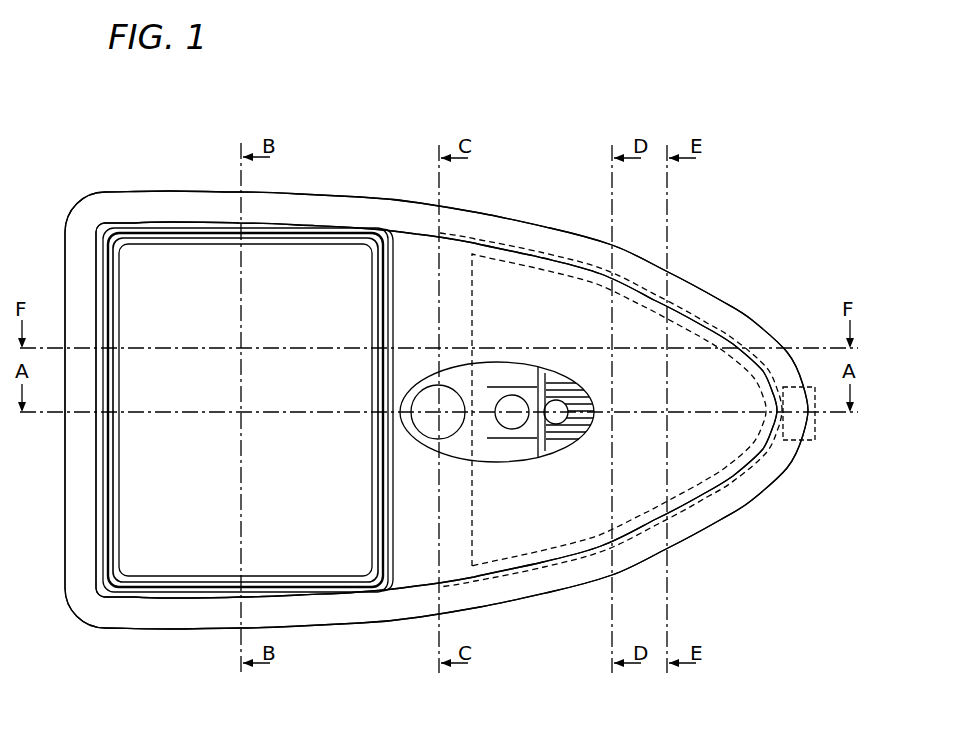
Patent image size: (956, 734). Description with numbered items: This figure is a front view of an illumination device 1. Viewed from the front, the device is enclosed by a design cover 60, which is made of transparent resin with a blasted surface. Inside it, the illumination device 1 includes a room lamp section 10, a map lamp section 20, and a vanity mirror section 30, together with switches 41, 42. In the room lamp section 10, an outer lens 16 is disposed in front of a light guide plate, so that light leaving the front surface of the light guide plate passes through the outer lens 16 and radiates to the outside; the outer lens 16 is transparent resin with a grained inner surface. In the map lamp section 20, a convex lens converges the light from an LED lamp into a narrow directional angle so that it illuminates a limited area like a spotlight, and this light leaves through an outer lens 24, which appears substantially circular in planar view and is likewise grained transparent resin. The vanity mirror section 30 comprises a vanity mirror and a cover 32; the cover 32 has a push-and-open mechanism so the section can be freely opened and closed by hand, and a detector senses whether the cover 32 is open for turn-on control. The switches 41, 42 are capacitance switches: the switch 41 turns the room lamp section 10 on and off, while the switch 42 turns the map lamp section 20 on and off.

The illumination device 1 is at (147, 146).
The room lamp section 10 is at (539, 252).
The outer lens 16 is at (704, 478).
The map lamp section 20 is at (432, 385).
The outer lens 24 is at (452, 385).
The vanity mirror section 30 is at (288, 206).
The cover 32 is at (132, 531).
The switch 41 is at (562, 425).
The switch 42 is at (513, 430).
The design cover 60 is at (769, 489).